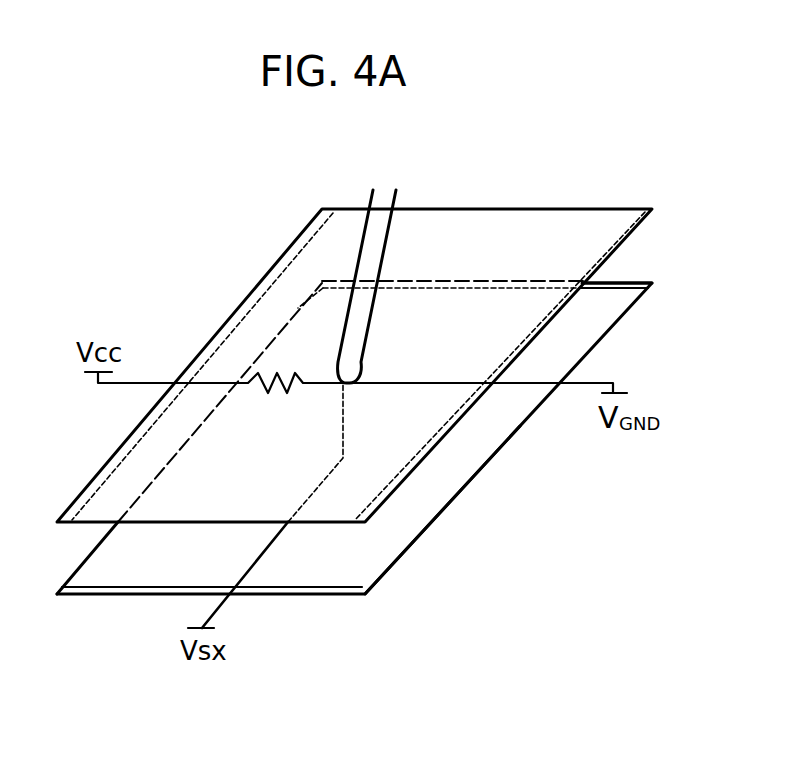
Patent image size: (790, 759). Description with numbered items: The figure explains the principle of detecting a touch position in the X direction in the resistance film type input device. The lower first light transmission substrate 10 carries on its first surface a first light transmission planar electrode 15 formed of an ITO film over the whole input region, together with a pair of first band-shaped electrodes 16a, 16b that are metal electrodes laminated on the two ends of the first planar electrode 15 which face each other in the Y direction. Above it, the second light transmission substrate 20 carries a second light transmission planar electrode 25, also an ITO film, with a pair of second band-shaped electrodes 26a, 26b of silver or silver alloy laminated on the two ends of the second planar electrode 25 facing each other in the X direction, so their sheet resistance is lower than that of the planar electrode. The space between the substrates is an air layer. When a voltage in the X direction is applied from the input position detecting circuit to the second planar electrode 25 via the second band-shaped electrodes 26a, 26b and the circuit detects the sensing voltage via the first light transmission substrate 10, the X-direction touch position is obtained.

The first light transmission substrate 10 is at (623, 320).
The first light transmission planar electrode 15 is at (483, 450).
The first band-shaped electrode 16a is at (285, 588).
The first band-shaped electrode 16b is at (613, 285).
The second light transmission substrate 20 is at (530, 201).
The second light transmission planar electrode 25 is at (428, 233).
The second band-shaped electrode 26a is at (620, 243).
The second band-shaped electrode 26b is at (283, 259).